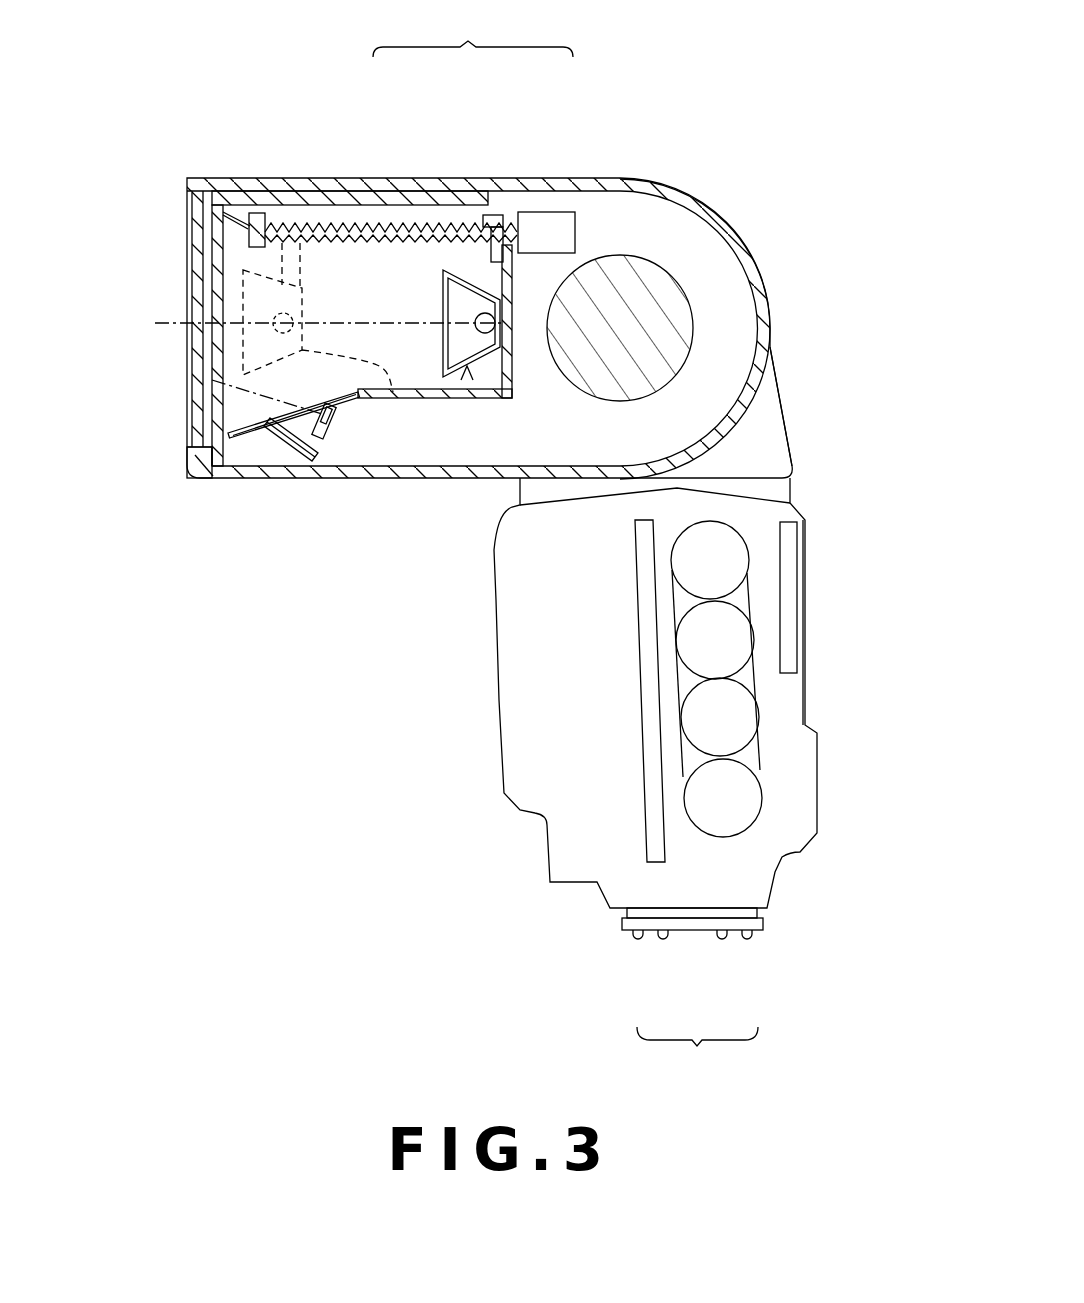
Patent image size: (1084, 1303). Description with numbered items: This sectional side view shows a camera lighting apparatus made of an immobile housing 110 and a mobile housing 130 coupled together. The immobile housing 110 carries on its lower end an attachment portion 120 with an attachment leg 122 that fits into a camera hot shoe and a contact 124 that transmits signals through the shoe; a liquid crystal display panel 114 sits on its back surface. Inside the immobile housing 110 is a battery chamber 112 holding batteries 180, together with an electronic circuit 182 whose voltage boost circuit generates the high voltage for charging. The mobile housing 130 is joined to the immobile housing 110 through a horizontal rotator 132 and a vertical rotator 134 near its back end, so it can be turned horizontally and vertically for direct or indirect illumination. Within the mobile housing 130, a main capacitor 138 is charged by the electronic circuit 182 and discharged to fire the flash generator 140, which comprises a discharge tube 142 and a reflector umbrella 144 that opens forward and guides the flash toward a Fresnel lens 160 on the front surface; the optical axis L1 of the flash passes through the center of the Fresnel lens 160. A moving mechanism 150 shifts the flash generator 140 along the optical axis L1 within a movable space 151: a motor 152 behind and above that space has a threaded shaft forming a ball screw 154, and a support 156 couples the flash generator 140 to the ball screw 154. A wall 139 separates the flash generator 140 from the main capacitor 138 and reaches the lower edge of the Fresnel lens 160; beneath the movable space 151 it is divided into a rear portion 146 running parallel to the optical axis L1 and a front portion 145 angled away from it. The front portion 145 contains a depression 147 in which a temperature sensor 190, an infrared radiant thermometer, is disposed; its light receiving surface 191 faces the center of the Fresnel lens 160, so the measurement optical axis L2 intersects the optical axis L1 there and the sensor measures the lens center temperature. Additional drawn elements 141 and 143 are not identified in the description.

The immobile housing 110 is at (803, 690).
The battery chamber 112 is at (765, 752).
The liquid crystal display panel 114 is at (800, 553).
The attachment portion 120 is at (692, 994).
The attachment leg 122 is at (695, 937).
The contact 124 is at (663, 937).
The mobile housing 130 is at (618, 178).
The horizontal rotator 132 is at (510, 501).
The vertical rotator 134 is at (783, 408).
The main capacitor 138 is at (640, 293).
The wall 139 is at (513, 363).
The flash generator 140 is at (292, 358).
The top plate 141 is at (283, 191).
The discharge tube 142 is at (393, 393).
The front panel 143 is at (193, 230).
The reflector umbrella 144 is at (443, 272).
The front portion 145 is at (248, 437).
The rear portion 146 is at (467, 372).
The depression 147 is at (328, 453).
The moving mechanism 150 is at (473, 32).
The movable space 151 is at (349, 311).
The motor 152 is at (545, 212).
The ball screw 154 is at (330, 225).
The support 156 is at (308, 262).
The Fresnel lens 160 is at (212, 383).
The batteries 180 is at (743, 715).
The electronic circuit 182 is at (647, 800).
The temperature sensor 190 is at (302, 452).
The light receiving surface 191 is at (258, 397).
The optical axis L1 is at (157, 323).
The measurement optical axis L2 is at (220, 348).